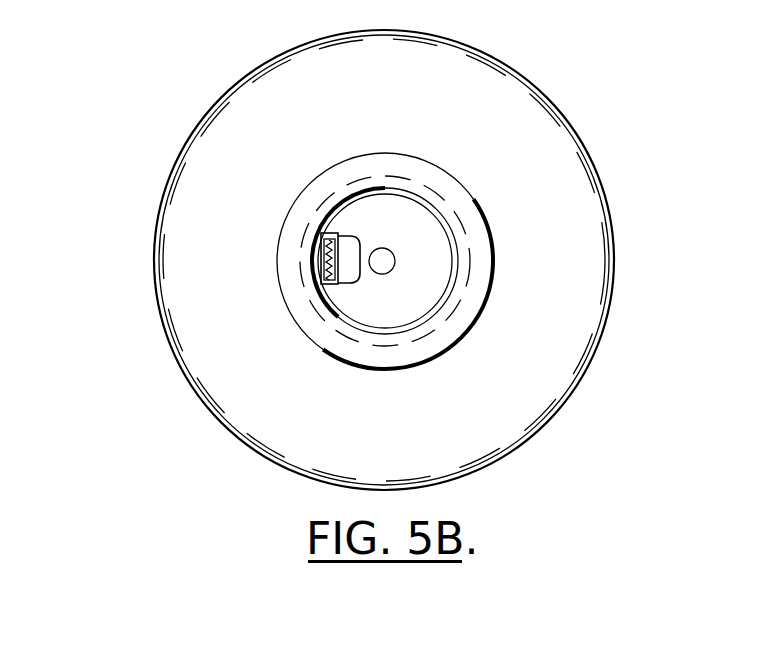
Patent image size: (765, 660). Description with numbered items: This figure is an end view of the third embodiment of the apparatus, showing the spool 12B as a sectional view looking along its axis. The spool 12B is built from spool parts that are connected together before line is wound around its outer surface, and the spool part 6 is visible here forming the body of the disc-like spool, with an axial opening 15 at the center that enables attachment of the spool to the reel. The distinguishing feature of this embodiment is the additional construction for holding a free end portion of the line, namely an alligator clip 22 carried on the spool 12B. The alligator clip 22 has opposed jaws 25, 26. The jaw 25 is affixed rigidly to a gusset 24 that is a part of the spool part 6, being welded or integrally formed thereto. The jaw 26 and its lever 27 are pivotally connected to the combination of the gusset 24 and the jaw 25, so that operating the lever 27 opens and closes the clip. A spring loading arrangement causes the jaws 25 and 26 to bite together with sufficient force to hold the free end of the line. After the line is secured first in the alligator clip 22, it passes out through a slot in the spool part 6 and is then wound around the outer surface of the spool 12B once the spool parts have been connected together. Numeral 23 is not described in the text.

The spool part 6 is at (614, 252).
The spool 12B is at (148, 368).
The axial openings 15 is at (391, 256).
The alligator clip 22 is at (328, 286).
The hub bore wall 23 is at (330, 213).
The gusset 24 is at (320, 255).
The jaw 25 is at (326, 281).
The jaw 26 is at (336, 235).
The lever 27 is at (360, 245).